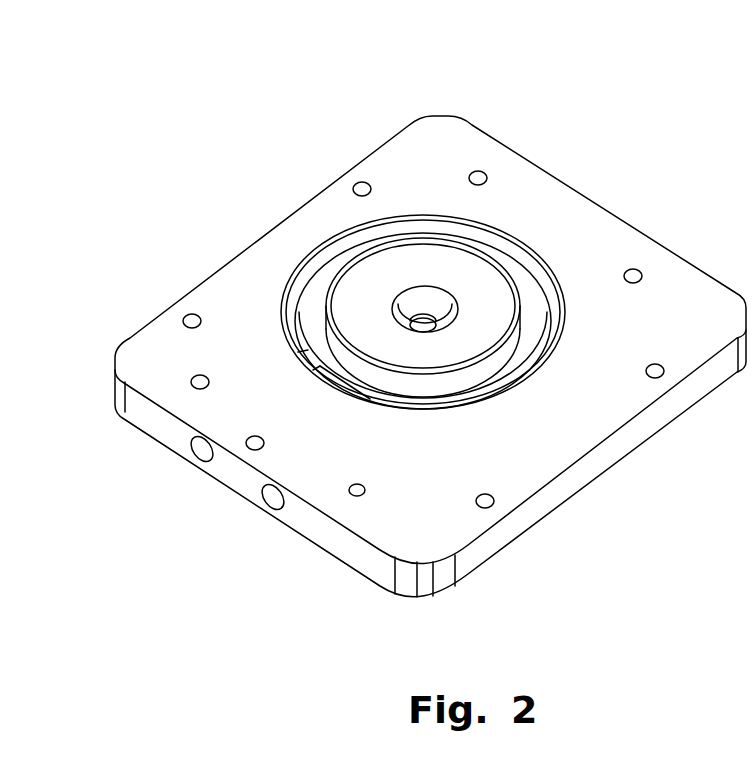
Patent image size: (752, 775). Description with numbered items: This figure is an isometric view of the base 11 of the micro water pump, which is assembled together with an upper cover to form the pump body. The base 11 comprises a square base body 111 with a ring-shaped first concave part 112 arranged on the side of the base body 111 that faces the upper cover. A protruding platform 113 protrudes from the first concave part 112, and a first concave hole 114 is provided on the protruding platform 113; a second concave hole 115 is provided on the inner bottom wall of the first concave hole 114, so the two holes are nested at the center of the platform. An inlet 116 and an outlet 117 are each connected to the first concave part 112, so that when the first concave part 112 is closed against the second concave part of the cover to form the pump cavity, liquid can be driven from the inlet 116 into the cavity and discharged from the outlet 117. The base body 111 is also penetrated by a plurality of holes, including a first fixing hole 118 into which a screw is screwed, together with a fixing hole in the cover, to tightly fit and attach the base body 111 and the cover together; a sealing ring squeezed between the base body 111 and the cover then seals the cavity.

The base 11 is at (433, 41).
The base body 111 is at (157, 347).
The first concave part 112 is at (320, 301).
The protruding platform 113 is at (383, 268).
The first concave hole 114 is at (427, 297).
The second concave hole 115 is at (440, 307).
The inlet 116 is at (202, 448).
The outlet 117 is at (273, 497).
The first fixing hole 118 is at (353, 492).